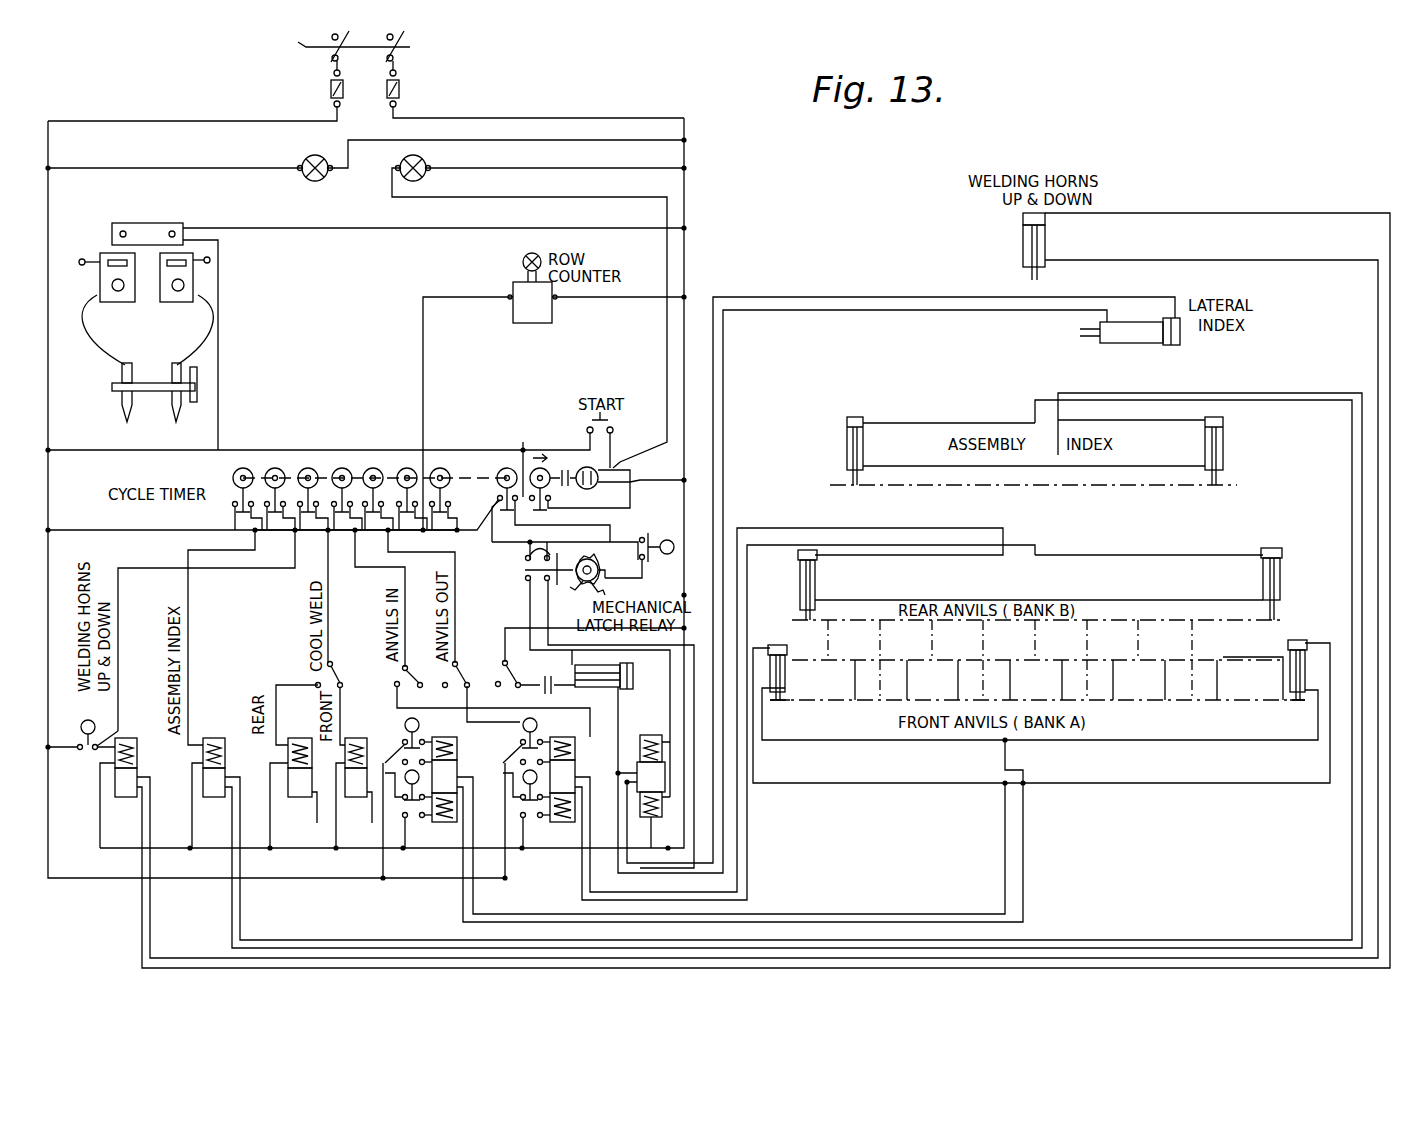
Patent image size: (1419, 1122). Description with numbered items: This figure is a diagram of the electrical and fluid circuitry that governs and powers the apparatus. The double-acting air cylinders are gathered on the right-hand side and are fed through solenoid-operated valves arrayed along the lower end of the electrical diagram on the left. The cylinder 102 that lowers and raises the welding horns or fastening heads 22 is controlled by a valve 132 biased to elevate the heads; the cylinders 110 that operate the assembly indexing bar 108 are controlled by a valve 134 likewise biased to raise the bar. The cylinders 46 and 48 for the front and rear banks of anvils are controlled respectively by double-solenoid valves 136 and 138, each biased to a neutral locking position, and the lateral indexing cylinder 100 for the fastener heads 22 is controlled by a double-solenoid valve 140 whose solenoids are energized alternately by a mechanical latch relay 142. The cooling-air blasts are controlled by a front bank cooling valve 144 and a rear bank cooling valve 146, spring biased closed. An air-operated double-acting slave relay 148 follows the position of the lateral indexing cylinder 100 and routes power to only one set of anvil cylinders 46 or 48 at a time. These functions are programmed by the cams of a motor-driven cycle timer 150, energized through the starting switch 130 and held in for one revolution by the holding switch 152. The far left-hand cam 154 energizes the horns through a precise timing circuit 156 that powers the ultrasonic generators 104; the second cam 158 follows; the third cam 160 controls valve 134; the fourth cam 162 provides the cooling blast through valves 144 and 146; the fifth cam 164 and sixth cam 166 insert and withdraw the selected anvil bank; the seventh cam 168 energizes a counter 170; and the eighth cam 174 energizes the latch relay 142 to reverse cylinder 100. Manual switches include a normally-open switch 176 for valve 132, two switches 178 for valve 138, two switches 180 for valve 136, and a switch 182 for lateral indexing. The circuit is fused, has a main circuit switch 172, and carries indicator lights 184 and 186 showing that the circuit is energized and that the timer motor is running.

The welding horns or fastening heads 22 is at (124, 418).
The front bank anvil cylinders 46 is at (772, 645).
The rear bank anvil cylinders 48 is at (800, 574).
The lateral indexing cylinder 100 is at (1170, 345).
The welding horn cylinder 102 is at (1022, 238).
The ultrasonic generators 104 is at (132, 286).
The indexing bar 108 is at (1168, 490).
The indexing bar cylinders 110 is at (846, 446).
The starting switch 130 is at (613, 428).
The welding horn control valve 132 is at (126, 800).
The indexing bar control valve 134 is at (214, 800).
The front anvil double-solenoid valve 136 is at (523, 822).
The rear anvil double-solenoid valve 138 is at (405, 822).
The lateral indexing double-solenoid valve 140 is at (637, 822).
The mechanical latch relay 142 is at (547, 597).
The front bank cooling valve 144 is at (300, 800).
The rear bank cooling valve 146 is at (356, 800).
The air-operated slave relay 148 is at (633, 675).
The cycle timer 150 is at (221, 516).
The holding switch 152 is at (550, 498).
The first cam 154 is at (243, 466).
The timing circuit 156 is at (157, 228).
The second cam 158 is at (275, 466).
The third cam 160 is at (308, 466).
The fourth cam 162 is at (342, 466).
The fifth cam 164 is at (373, 466).
The sixth cam 166 is at (407, 466).
The seventh cam 168 is at (440, 466).
The counter 170 is at (512, 322).
The main circuit switch 172 is at (408, 58).
The eighth cam 174 is at (507, 466).
The manual welding horn switch 176 is at (100, 722).
The rear anvil manual switches 178 is at (387, 743).
The front anvil manual switches 180 is at (516, 741).
The manual lateral indexing switch 182 is at (660, 538).
The circuit indicator light 184 is at (308, 158).
The timer motor indicator light 186 is at (424, 157).